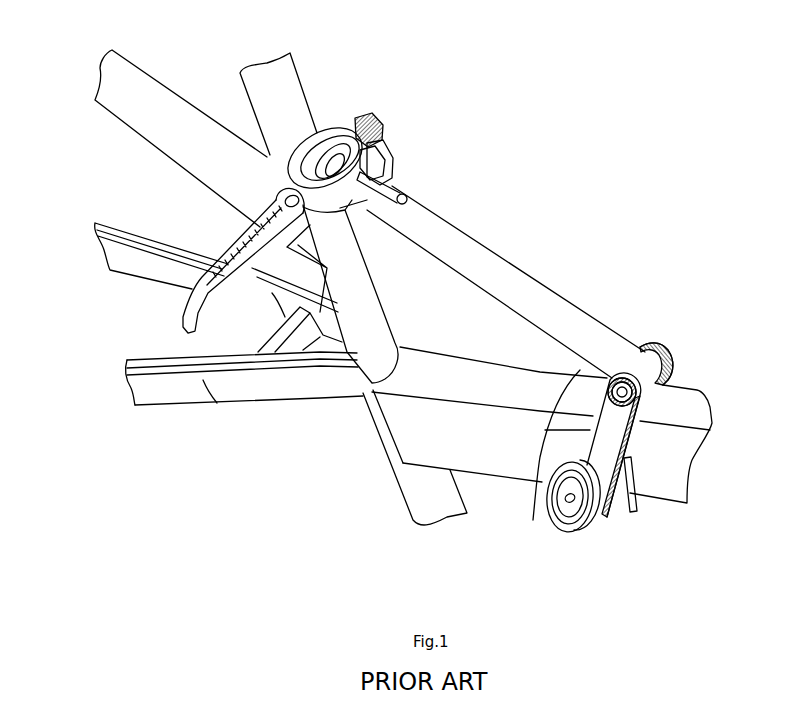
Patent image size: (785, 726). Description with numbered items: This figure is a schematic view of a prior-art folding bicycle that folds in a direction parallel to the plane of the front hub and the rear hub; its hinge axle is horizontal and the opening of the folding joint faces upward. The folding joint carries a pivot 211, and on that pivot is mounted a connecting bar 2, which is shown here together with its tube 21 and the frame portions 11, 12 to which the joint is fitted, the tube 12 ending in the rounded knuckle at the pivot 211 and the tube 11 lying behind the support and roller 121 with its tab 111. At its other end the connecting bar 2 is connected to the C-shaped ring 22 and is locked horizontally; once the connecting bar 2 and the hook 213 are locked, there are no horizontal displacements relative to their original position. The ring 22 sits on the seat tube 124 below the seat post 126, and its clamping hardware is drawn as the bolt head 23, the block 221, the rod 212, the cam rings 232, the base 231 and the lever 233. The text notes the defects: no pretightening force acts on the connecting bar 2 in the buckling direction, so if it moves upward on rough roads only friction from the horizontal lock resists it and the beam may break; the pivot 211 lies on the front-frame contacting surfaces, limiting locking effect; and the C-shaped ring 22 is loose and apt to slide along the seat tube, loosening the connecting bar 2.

The seat post 126 is at (250, 100).
The C-shaped ring 22 is at (325, 133).
The cam ring 232 is at (357, 112).
The bolt head 23 is at (383, 110).
The clamp block 221 is at (382, 143).
The hook 213 is at (385, 146).
The skewer rod 212 is at (403, 172).
The quick release lever 233 is at (243, 252).
The clamp base 231 is at (357, 203).
The seat tube 124 is at (385, 337).
The connecting bar 2 is at (506, 282).
The connecting tube 21 is at (548, 283).
The support bracket 12 is at (575, 420).
The pivot 211 is at (652, 360).
The rear frame tube 11 is at (681, 438).
The roller wheel 121 is at (533, 520).
The mounting tab 111 is at (627, 492).